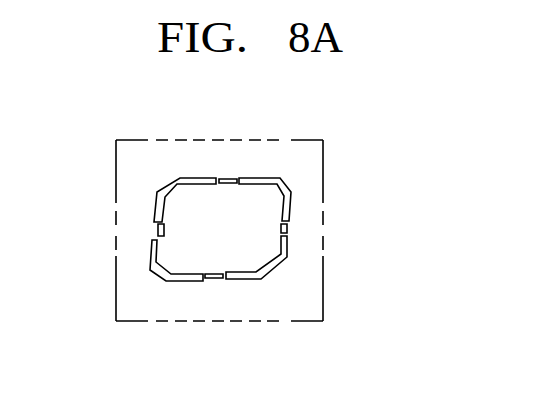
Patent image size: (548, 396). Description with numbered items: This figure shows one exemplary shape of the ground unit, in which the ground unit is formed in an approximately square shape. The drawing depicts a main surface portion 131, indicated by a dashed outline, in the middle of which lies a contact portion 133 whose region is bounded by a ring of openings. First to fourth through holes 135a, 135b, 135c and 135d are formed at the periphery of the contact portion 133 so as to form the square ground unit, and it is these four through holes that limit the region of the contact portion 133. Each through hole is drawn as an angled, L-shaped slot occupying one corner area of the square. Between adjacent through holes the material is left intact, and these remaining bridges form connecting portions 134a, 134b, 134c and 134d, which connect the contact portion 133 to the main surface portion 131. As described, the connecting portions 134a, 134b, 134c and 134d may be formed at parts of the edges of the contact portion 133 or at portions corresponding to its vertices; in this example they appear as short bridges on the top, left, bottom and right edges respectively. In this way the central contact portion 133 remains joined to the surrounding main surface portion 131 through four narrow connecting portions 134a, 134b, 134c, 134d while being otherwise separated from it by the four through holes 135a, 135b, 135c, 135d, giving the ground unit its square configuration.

The main surface portion 131 is at (313, 172).
The contact portion 133 is at (250, 202).
The connecting portion 134a is at (226, 180).
The connecting portion 134b is at (156, 228).
The connecting portion 134c is at (213, 279).
The connecting portion 134d is at (288, 227).
The first through hole 135a is at (167, 187).
The second through hole 135b is at (163, 271).
The third through hole 135c is at (275, 267).
The fourth through hole 135d is at (291, 191).